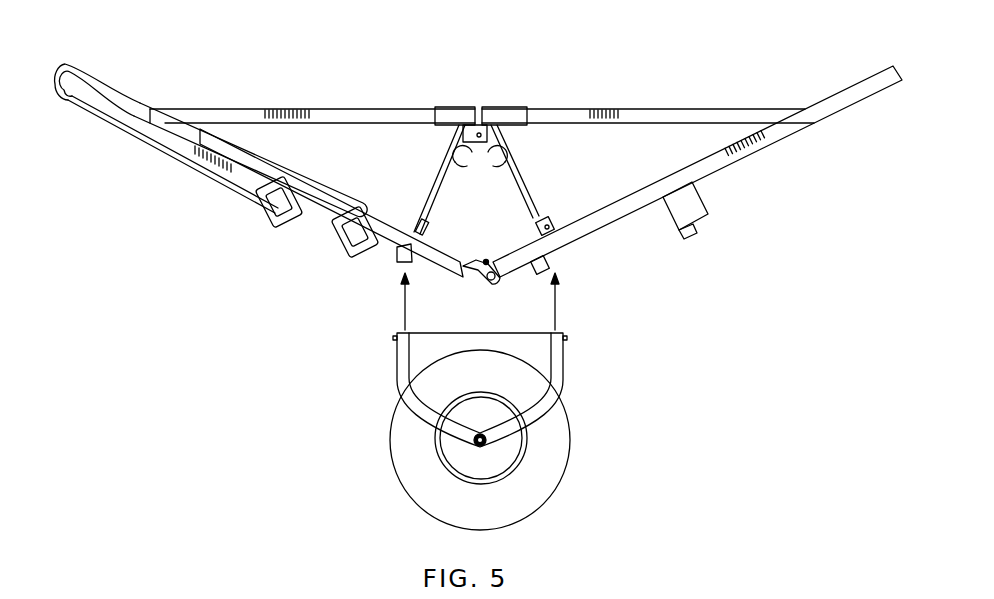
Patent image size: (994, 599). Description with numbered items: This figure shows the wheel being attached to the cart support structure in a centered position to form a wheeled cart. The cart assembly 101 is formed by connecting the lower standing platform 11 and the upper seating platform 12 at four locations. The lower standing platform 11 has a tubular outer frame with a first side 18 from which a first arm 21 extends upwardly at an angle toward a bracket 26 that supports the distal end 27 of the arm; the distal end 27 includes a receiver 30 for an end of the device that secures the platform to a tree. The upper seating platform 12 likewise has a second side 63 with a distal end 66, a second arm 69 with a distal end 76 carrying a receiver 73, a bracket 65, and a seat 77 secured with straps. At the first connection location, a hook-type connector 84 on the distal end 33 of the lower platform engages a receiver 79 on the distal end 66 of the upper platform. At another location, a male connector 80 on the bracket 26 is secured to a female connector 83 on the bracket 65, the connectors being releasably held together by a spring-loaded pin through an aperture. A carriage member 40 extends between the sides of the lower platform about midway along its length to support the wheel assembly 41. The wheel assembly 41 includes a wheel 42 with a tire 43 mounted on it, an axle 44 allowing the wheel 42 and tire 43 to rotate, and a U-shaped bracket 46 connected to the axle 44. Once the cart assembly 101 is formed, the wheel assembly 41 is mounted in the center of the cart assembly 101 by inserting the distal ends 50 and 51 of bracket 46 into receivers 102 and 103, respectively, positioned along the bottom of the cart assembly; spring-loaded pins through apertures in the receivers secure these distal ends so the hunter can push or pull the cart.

The cart assembly 101 is at (725, 52).
The lower standing platform 11 is at (770, 107).
The upper seating platform 12 is at (187, 105).
The first side 18 is at (777, 134).
The first arm 21 is at (683, 117).
The bracket 26 is at (539, 196).
The distal end 27 is at (522, 104).
The receiver 30 is at (497, 103).
The distal end 33 is at (488, 260).
The carriage member 40 is at (697, 208).
The wheel assembly 41 is at (595, 448).
The wheel 42 is at (507, 453).
The tire 43 is at (512, 510).
The axle 44 is at (474, 444).
The U-shaped bracket 46 is at (560, 352).
The distal end 50 is at (400, 332).
The distal end 51 is at (560, 332).
The second side 63 is at (382, 250).
The bracket 65 is at (432, 201).
The distal end 66 is at (470, 272).
The second arm 69 is at (240, 117).
The receiver 73 is at (462, 100).
The distal end 76 is at (440, 104).
The seat 77 is at (297, 226).
The receiver 79 is at (481, 262).
The male connector 80 is at (513, 167).
The female connector 83 is at (450, 162).
The connector 84 is at (494, 282).
The receiver 102 is at (405, 258).
The receiver 103 is at (565, 257).